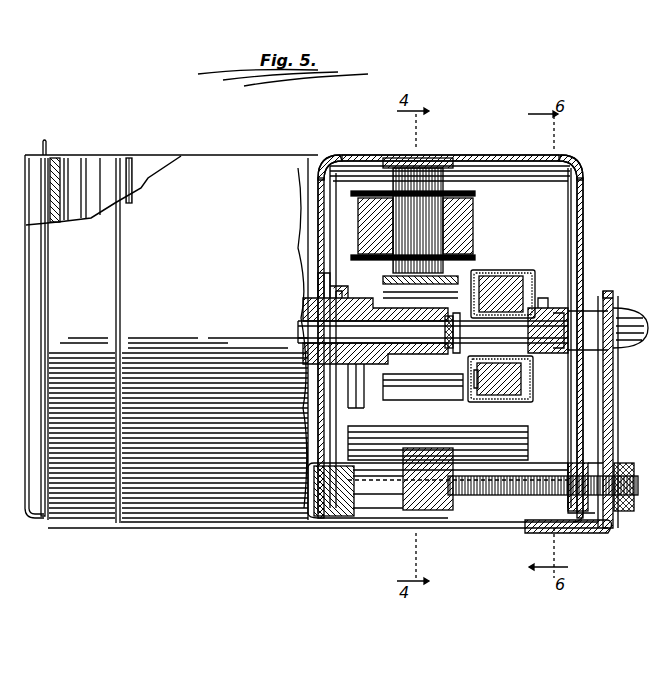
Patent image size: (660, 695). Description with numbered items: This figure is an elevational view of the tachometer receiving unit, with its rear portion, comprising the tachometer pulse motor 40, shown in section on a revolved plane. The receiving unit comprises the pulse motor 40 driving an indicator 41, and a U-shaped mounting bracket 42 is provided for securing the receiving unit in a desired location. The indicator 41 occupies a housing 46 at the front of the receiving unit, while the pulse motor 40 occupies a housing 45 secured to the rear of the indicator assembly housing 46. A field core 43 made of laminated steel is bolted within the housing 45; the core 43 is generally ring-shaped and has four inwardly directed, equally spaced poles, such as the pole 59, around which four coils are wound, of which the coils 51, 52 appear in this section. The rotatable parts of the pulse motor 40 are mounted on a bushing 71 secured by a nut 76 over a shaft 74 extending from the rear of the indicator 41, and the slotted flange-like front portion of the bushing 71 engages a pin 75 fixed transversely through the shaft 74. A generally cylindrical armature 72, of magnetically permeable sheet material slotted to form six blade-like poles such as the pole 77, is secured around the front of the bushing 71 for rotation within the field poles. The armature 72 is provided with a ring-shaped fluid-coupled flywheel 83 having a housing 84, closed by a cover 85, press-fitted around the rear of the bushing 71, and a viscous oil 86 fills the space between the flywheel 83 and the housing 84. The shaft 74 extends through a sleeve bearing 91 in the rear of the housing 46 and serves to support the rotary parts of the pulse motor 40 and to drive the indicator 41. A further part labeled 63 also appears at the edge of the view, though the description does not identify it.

The pulse motor 40 is at (500, 537).
The indicator 41 is at (243, 535).
The U-shaped mounting bracket 42 is at (592, 525).
The field core 43 is at (425, 502).
The housing 45 is at (365, 510).
The indicator assembly housing 46 is at (220, 487).
The coil 51 is at (470, 205).
The coil 52 is at (398, 412).
The pole 59 is at (440, 226).
The plate 63 is at (640, 298).
The bushing 71 is at (478, 305).
The armature 72 is at (456, 392).
The shaft 74 is at (300, 328).
The pin 75 is at (437, 325).
The nut 76 is at (560, 340).
The pole 77 is at (375, 272).
The fluid-coupled flywheel 83 is at (487, 395).
The housing 84 is at (495, 390).
The cover 85 is at (503, 392).
The viscous oil 86 is at (515, 262).
The sleeve bearing 91 is at (343, 390).